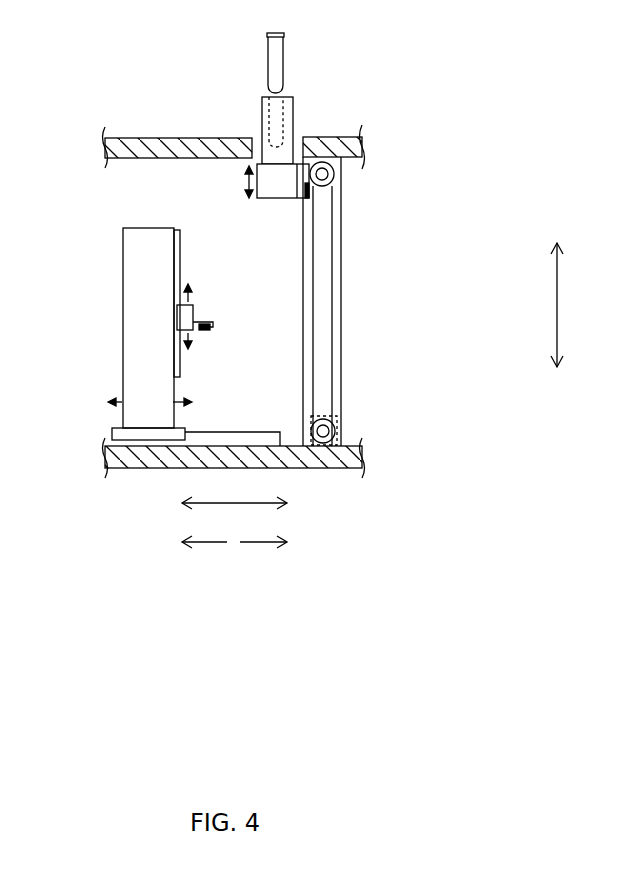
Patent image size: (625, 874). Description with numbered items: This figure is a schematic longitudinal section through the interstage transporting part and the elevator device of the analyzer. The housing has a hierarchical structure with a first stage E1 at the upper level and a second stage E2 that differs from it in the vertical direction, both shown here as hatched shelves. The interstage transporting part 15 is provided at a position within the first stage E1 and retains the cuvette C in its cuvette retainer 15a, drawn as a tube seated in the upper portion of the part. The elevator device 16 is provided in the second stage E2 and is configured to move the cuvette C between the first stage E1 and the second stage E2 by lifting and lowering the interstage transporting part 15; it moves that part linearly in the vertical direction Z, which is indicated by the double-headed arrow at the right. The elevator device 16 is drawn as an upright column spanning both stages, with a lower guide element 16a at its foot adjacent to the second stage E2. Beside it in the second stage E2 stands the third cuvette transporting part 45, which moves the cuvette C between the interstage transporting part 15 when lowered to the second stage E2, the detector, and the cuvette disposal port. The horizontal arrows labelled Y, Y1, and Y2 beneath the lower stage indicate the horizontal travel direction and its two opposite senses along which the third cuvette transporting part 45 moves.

The interstage transporting part 15 is at (262, 127).
The cuvette retainer 15a is at (277, 125).
The elevator device 16 is at (345, 291).
The lower roller 16a is at (338, 427).
The third cuvette transporting part 45 is at (114, 318).
The cuvette C is at (276, 63).
The first stage E1 is at (345, 113).
The second stage E2 is at (354, 388).
The Y direction Y is at (234, 497).
The Y1 direction Y1 is at (263, 535).
The Y2 direction Y2 is at (204, 535).
The vertical direction Z is at (550, 305).